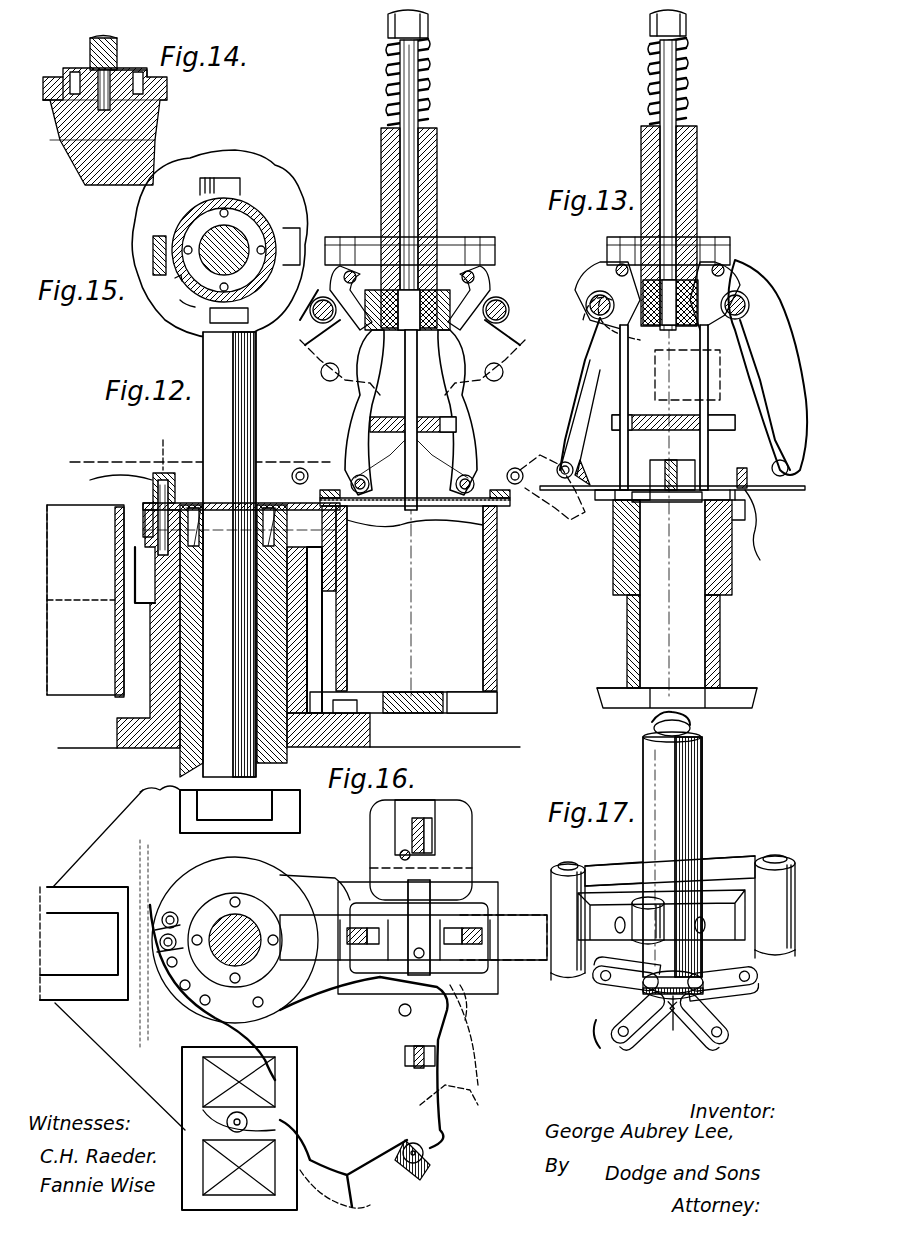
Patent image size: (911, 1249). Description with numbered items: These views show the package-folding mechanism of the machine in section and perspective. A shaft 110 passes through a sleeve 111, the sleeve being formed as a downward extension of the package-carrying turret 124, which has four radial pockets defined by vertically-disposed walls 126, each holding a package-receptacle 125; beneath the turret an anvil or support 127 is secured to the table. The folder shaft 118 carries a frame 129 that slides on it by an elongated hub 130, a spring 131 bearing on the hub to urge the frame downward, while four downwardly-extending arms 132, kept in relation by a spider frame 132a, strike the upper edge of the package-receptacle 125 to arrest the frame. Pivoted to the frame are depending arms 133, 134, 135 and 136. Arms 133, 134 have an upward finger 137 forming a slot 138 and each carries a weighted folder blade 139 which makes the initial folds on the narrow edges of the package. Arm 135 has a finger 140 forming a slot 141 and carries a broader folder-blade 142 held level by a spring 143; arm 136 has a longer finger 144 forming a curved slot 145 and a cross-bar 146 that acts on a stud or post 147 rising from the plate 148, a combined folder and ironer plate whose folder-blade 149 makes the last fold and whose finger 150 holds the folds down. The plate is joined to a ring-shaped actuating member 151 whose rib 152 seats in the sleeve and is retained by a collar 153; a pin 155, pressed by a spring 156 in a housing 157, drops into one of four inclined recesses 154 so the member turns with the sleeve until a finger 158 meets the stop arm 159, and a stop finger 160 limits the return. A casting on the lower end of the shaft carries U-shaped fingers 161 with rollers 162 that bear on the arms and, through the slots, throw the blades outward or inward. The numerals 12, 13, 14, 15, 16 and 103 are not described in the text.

In FIG. 13, the base plate 12 is at (686, 30).
In FIG. 12, the bolt / base 13 is at (428, 22).
In FIG. 12, the axis line 14 is at (159, 441).
In FIG. 12, the flange member 15 is at (140, 525).
In FIG. 12, the lever pivot 16 is at (528, 470).
In FIG. 16, the frame outline 103 is at (285, 1160).
In FIG. 16, the shaft 110 is at (240, 930).
In FIG. 15, the sleeve 111 is at (302, 205).
In FIG. 12, the sleeve 111 is at (180, 755).
In FIG. 12, the folder shaft 118 is at (418, 135).
In FIG. 13, the folder shaft 118 is at (648, 30).
In FIG. 16, the package-carrying turret 124 is at (170, 958).
In FIG. 12, the package-receptacle 125 is at (497, 648).
In FIG. 13, the package-receptacle 125 is at (732, 510).
In FIG. 13, the vertically-disposed walls 126 is at (733, 557).
In FIG. 12, the anvil or support 127 is at (455, 705).
In FIG. 13, the anvil or support 127 is at (735, 688).
In FIG. 12, the frame 129 is at (470, 252).
In FIG. 13, the frame 129 is at (732, 248).
In FIG. 17, the frame 129 is at (735, 888).
In FIG. 12, the elongated sleeve or hub 130 is at (438, 173).
In FIG. 13, the elongated sleeve or hub 130 is at (698, 213).
In FIG. 17, the elongated sleeve or hub 130 is at (702, 768).
In FIG. 12, the spring 131 is at (430, 92).
In FIG. 13, the spring 131 is at (690, 116).
In FIG. 17, the spring 131 is at (692, 724).
In FIG. 13, the downwardly-extending arms 132 is at (722, 442).
In FIG. 17, the downwardly-extending arms 132 is at (600, 952).
In FIG. 12, the spider frame 132a is at (418, 440).
In FIG. 12, the depending arm 133 is at (345, 410).
In FIG. 16, the depending arm 133 is at (350, 925).
In FIG. 12, the depending arm 134 is at (478, 395).
In FIG. 13, the depending arm 134 is at (668, 452).
In FIG. 16, the depending arm 134 is at (485, 925).
In FIG. 12, the depending arm 135 is at (420, 410).
In FIG. 13, the depending arm 135 is at (590, 345).
In FIG. 16, the depending arm 135 is at (440, 825).
In FIG. 13, the depending arm 136 is at (770, 400).
In FIG. 16, the depending arm 136 is at (478, 1055).
In FIG. 12, the finger 137 is at (320, 375).
In FIG. 12, the slot 138 is at (498, 325).
In FIG. 12, the folder blade 139 is at (392, 505).
In FIG. 13, the folder blade 139 is at (672, 503).
In FIG. 16, the folder blade 139 is at (470, 975).
In FIG. 13, the finger 140 is at (592, 290).
In FIG. 13, the slot 141 is at (596, 262).
In FIG. 13, the folder-blade 142 is at (578, 492).
In FIG. 16, the folder-blade 142 is at (472, 855).
In FIG. 13, the spring 143 is at (585, 468).
In FIG. 16, the spring 143 is at (398, 852).
In FIG. 13, the finger 144 is at (748, 300).
In FIG. 13, the curved slot 145 is at (760, 320).
In FIG. 13, the cross-bar 146 is at (770, 500).
In FIG. 16, the cross-bar 146 is at (410, 1066).
In FIG. 13, the stud or post 147 is at (745, 470).
In FIG. 16, the stud or post 147 is at (400, 1015).
In FIG. 13, the plate 148 is at (738, 518).
In FIG. 16, the plate 148 is at (380, 998).
In FIG. 13, the folder-blade 149 is at (700, 505).
In FIG. 16, the folder-blade 149 is at (448, 998).
In FIG. 16, the finger 150 is at (230, 1120).
In FIG. 14, the annular or ring-shaped actuating member 151 is at (170, 100).
In FIG. 12, the annular or ring-shaped actuating member 151 is at (290, 503).
In FIG. 16, the annular or ring-shaped actuating member 151 is at (320, 880).
In FIG. 15, the downwardly-projecting rib 152 is at (262, 210).
In FIG. 12, the downwardly-projecting rib 152 is at (262, 555).
In FIG. 12, the collar 153 is at (198, 510).
In FIG. 16, the collar 153 is at (200, 965).
In FIG. 14, the inclined sockets or recesses 154 is at (115, 110).
In FIG. 15, the inclined sockets or recesses 154 is at (158, 235).
In FIG. 12, the inclined sockets or recesses 154 is at (336, 575).
In FIG. 14, the pin 155 is at (95, 112).
In FIG. 15, the pin 155 is at (156, 272).
In FIG. 12, the pin 155 is at (115, 600).
In FIG. 14, the spring 156 is at (92, 52).
In FIG. 12, the spring 156 is at (160, 473).
In FIG. 14, the housing 157 is at (117, 45).
In FIG. 12, the housing 157 is at (90, 480).
In FIG. 16, the housing 157 is at (160, 922).
In FIG. 16, the finger 158 is at (430, 1135).
In FIG. 16, the stop arm 159 is at (432, 1162).
In FIG. 16, the stop finger 160 is at (350, 1195).
In FIG. 12, the double or U-shaped fingers 161 is at (445, 265).
In FIG. 13, the double or U-shaped fingers 161 is at (700, 235).
In FIG. 17, the double or U-shaped fingers 161 is at (690, 1030).
In FIG. 12, the roller 162 is at (492, 280).
In FIG. 13, the roller 162 is at (752, 330).
In FIG. 17, the roller 162 is at (610, 1042).